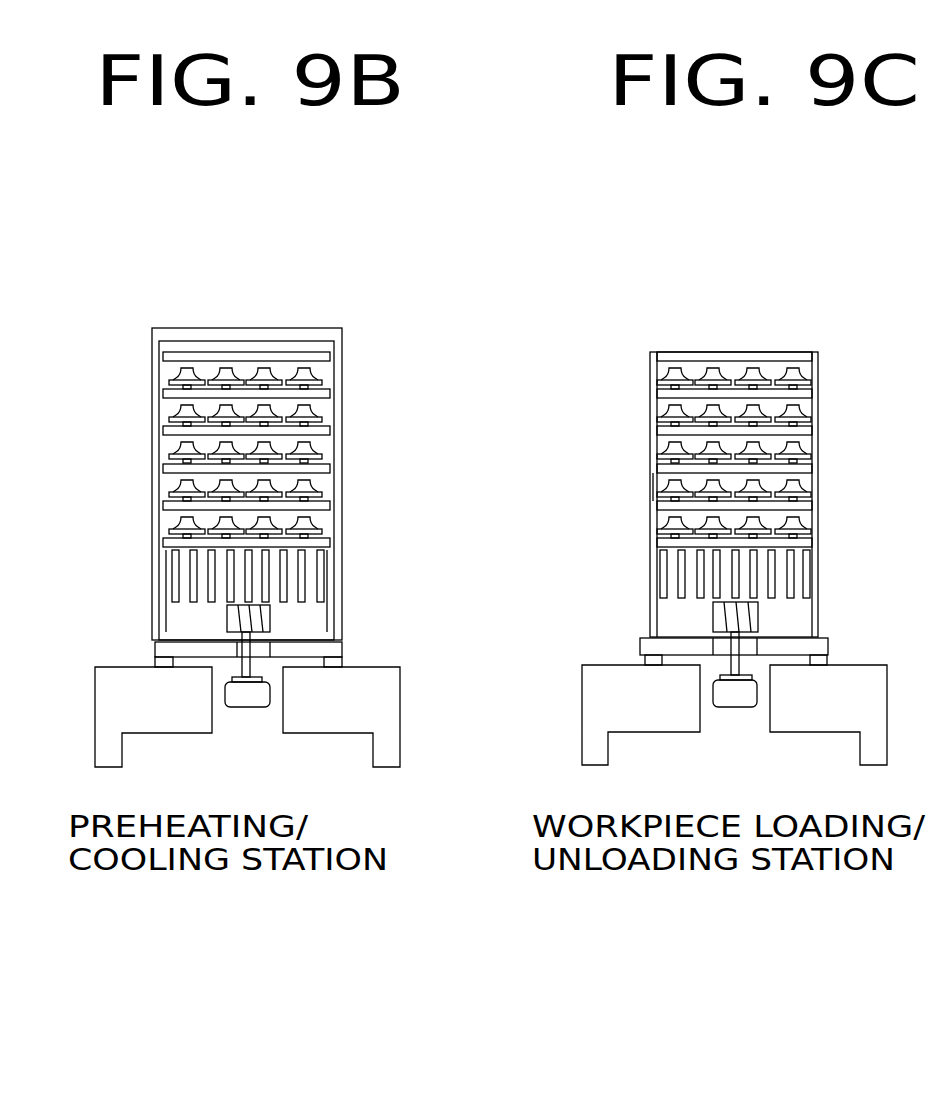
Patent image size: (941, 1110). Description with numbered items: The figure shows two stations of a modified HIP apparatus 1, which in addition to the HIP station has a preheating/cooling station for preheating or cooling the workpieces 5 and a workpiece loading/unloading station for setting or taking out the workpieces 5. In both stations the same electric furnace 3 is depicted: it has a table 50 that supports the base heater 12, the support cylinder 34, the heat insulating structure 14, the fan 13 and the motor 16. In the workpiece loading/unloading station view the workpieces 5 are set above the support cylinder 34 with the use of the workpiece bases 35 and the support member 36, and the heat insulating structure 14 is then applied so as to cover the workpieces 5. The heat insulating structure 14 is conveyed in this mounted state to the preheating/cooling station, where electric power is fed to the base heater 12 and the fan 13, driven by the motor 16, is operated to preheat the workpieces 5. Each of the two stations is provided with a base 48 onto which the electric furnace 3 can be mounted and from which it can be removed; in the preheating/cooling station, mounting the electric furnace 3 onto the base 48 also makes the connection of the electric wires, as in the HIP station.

In FIG. 9C, the HIP apparatus 1 is at (547, 238).
In FIG. 9B, the electric furnace 3 is at (323, 324).
In FIG. 9C, the electric furnace 3 is at (650, 378).
In FIG. 9B, the workpiece 5 is at (312, 441).
In FIG. 9C, the workpiece 5 is at (792, 443).
In FIG. 9B, the base heater 12 is at (316, 565).
In FIG. 9C, the base heater 12 is at (805, 566).
In FIG. 9B, the fan 13 is at (276, 617).
In FIG. 9C, the fan 13 is at (764, 617).
In FIG. 9B, the heat insulating structure 14 is at (244, 336).
In FIG. 9B, the motor 16 is at (246, 698).
In FIG. 9C, the motor 16 is at (736, 708).
In FIG. 9C, the support cylinder 34 is at (650, 590).
In FIG. 9C, the workpiece base 35 is at (707, 352).
In FIG. 9C, the support member 36 is at (655, 490).
In FIG. 9B, the base 48 is at (108, 662).
In FIG. 9C, the base 48 is at (597, 660).
In FIG. 9B, the table 50 is at (192, 652).
In FIG. 9C, the table 50 is at (680, 656).